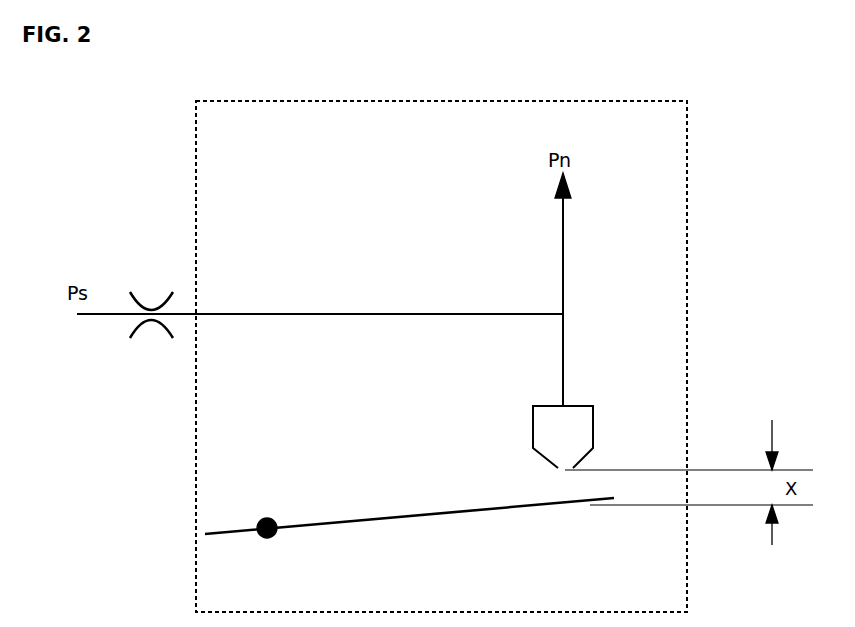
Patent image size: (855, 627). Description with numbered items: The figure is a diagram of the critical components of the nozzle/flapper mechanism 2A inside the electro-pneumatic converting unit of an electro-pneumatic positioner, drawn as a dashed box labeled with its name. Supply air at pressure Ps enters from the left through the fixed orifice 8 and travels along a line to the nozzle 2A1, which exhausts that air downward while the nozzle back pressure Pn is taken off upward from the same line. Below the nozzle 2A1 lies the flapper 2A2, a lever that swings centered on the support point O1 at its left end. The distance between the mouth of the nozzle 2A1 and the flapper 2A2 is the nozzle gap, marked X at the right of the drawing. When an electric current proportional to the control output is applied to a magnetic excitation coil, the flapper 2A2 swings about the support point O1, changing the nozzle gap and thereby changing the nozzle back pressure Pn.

The nozzle/flapper mechanism 2A is at (197, 143).
The nozzle 2A1 is at (532, 432).
The flapper 2A2 is at (505, 509).
The fixed orifice 8 is at (149, 305).
The support point O1 is at (272, 538).